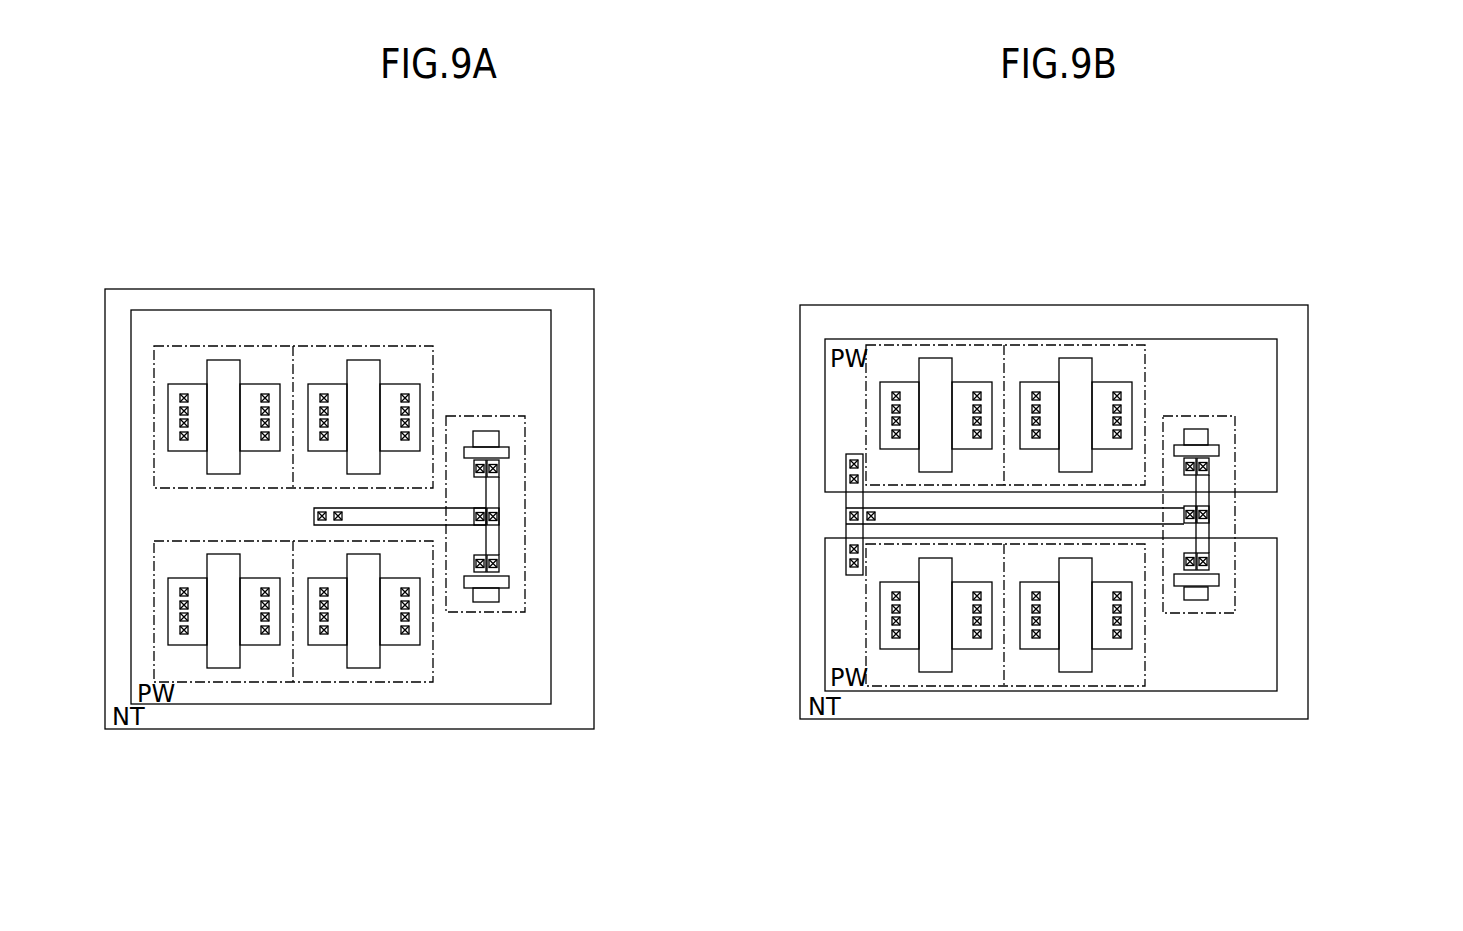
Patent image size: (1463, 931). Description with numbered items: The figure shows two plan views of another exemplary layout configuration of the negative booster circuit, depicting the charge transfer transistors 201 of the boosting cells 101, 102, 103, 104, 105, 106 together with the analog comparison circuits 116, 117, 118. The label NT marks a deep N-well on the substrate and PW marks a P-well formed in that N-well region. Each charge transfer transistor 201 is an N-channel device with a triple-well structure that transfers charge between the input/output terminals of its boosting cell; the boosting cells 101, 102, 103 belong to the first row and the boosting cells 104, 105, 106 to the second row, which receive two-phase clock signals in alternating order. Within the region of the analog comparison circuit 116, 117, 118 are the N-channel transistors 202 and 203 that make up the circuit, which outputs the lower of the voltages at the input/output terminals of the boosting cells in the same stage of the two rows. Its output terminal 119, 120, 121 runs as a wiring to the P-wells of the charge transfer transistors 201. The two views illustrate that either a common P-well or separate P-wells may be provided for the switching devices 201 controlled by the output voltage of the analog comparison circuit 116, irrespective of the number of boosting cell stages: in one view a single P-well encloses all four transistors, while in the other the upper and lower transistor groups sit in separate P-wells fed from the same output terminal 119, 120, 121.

In FIG. 9A, the boosting cell 101 is at (347, 344).
In FIG. 9B, the boosting cell 101 is at (1058, 343).
In FIG. 9A, the boosting cell 102 is at (347, 344).
In FIG. 9B, the boosting cell 102 is at (1058, 343).
In FIG. 9A, the boosting cell 103 is at (429, 345).
In FIG. 9B, the boosting cell 103 is at (1139, 345).
In FIG. 9A, the boosting cell 104 is at (359, 686).
In FIG. 9B, the boosting cell 104 is at (1074, 690).
In FIG. 9A, the boosting cell 105 is at (359, 686).
In FIG. 9B, the boosting cell 105 is at (1074, 690).
In FIG. 9A, the boosting cell 106 is at (425, 682).
In FIG. 9B, the boosting cell 106 is at (1133, 688).
In FIG. 9A, the analog comparison circuit 116 is at (594, 514).
In FIG. 9B, the analog comparison circuit 116 is at (1308, 514).
In FIG. 9A, the analog comparison circuit 117 is at (594, 514).
In FIG. 9B, the analog comparison circuit 117 is at (1308, 514).
In FIG. 9A, the analog comparison circuit 118 is at (594, 514).
In FIG. 9B, the analog comparison circuit 118 is at (1308, 514).
In FIG. 9A, the output terminal of analog comparison circuit 119 is at (313, 514).
In FIG. 9B, the output terminal of analog comparison circuit 119 is at (921, 511).
In FIG. 9A, the output terminal of analog comparison circuit 120 is at (313, 514).
In FIG. 9B, the output terminal of analog comparison circuit 120 is at (921, 511).
In FIG. 9A, the output terminal of analog comparison circuit 121 is at (314, 514).
In FIG. 9B, the output terminal of analog comparison circuit 121 is at (847, 515).
In FIG. 9A, the Nch charge transfer transistor 201 is at (259, 384).
In FIG. 9B, the Nch charge transfer transistor 201 is at (970, 382).
In FIG. 9A, the Nch transistor 202 is at (501, 431).
In FIG. 9B, the Nch transistor 202 is at (1217, 445).
In FIG. 9A, the Nch transistor 203 is at (505, 590).
In FIG. 9B, the Nch transistor 203 is at (1218, 590).